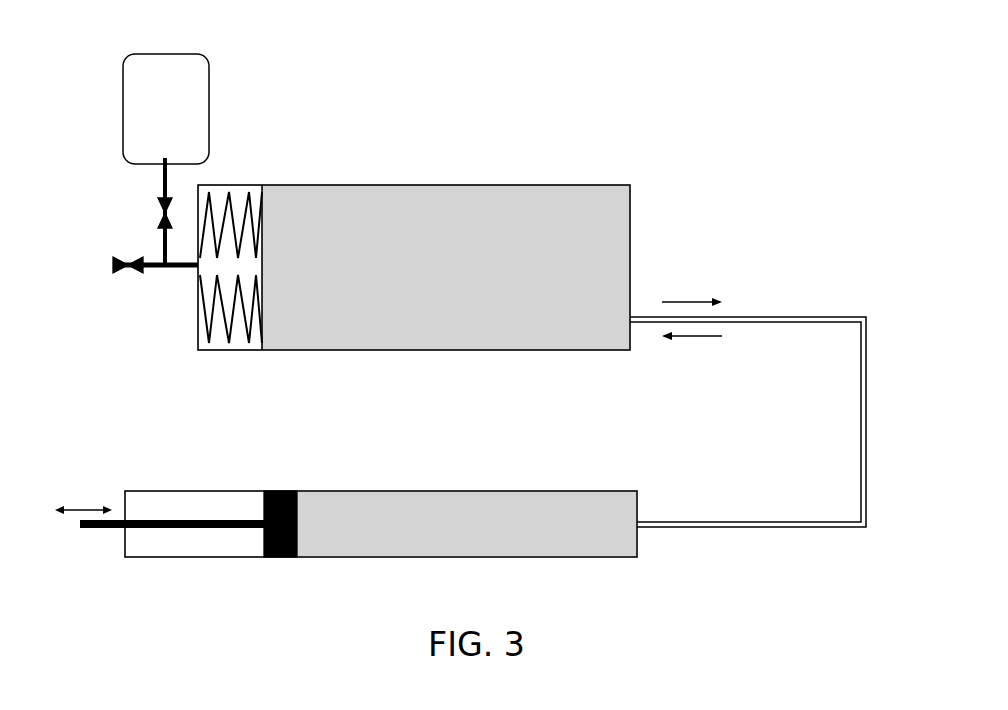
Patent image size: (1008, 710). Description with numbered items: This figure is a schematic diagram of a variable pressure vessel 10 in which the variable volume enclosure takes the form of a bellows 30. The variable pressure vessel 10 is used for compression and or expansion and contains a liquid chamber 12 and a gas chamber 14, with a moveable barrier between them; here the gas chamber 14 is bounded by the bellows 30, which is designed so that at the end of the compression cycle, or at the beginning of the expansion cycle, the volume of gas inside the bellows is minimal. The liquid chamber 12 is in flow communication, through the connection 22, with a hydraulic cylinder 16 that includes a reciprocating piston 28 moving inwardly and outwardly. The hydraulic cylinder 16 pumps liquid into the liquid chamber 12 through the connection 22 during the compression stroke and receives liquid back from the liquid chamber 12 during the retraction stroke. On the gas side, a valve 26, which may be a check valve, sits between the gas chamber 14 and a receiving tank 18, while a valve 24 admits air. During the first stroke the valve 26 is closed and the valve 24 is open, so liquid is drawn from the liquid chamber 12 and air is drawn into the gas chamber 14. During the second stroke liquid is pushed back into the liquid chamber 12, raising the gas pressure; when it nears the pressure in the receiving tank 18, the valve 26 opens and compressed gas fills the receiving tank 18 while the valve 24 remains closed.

The variable pressure vessel 10 is at (519, 350).
The liquid chamber 12 is at (541, 201).
The gas chamber 14 is at (242, 263).
The hydraulic cylinder 16 is at (475, 493).
The receiving tank 18 is at (210, 97).
The connection 22 is at (793, 317).
The valve 24 is at (128, 270).
The valve 26 is at (160, 213).
The reciprocating piston 28 is at (262, 508).
The bellows 30 is at (245, 330).